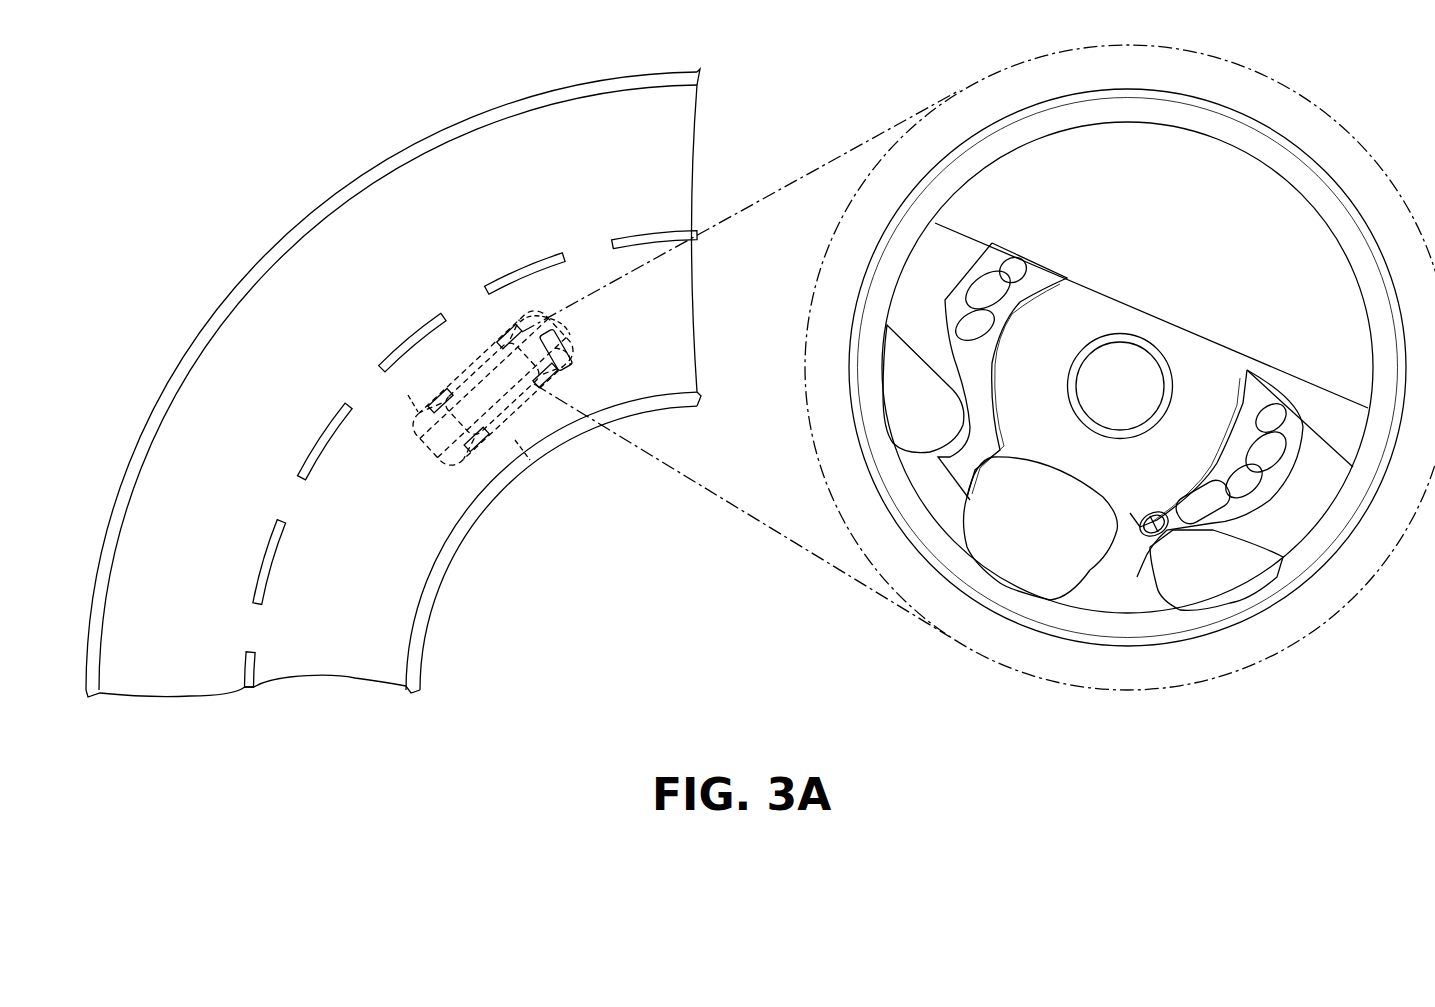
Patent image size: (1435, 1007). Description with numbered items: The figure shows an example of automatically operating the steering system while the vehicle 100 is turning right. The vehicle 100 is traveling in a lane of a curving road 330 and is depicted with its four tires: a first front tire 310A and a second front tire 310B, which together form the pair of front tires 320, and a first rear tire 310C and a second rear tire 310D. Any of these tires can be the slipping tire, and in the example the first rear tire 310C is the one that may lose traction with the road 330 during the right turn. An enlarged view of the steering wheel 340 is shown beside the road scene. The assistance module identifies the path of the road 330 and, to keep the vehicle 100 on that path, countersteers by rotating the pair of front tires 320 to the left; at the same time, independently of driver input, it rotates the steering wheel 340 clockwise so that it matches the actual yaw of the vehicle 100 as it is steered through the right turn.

The vehicle 100 is at (452, 465).
The first front tire 310A is at (567, 335).
The second front tire 310B is at (567, 360).
The first rear tire 310C is at (385, 382).
The second rear tire 310D is at (525, 452).
The pair of front tires 320 is at (567, 343).
The road 330 is at (340, 212).
The steering wheel 340 is at (940, 630).